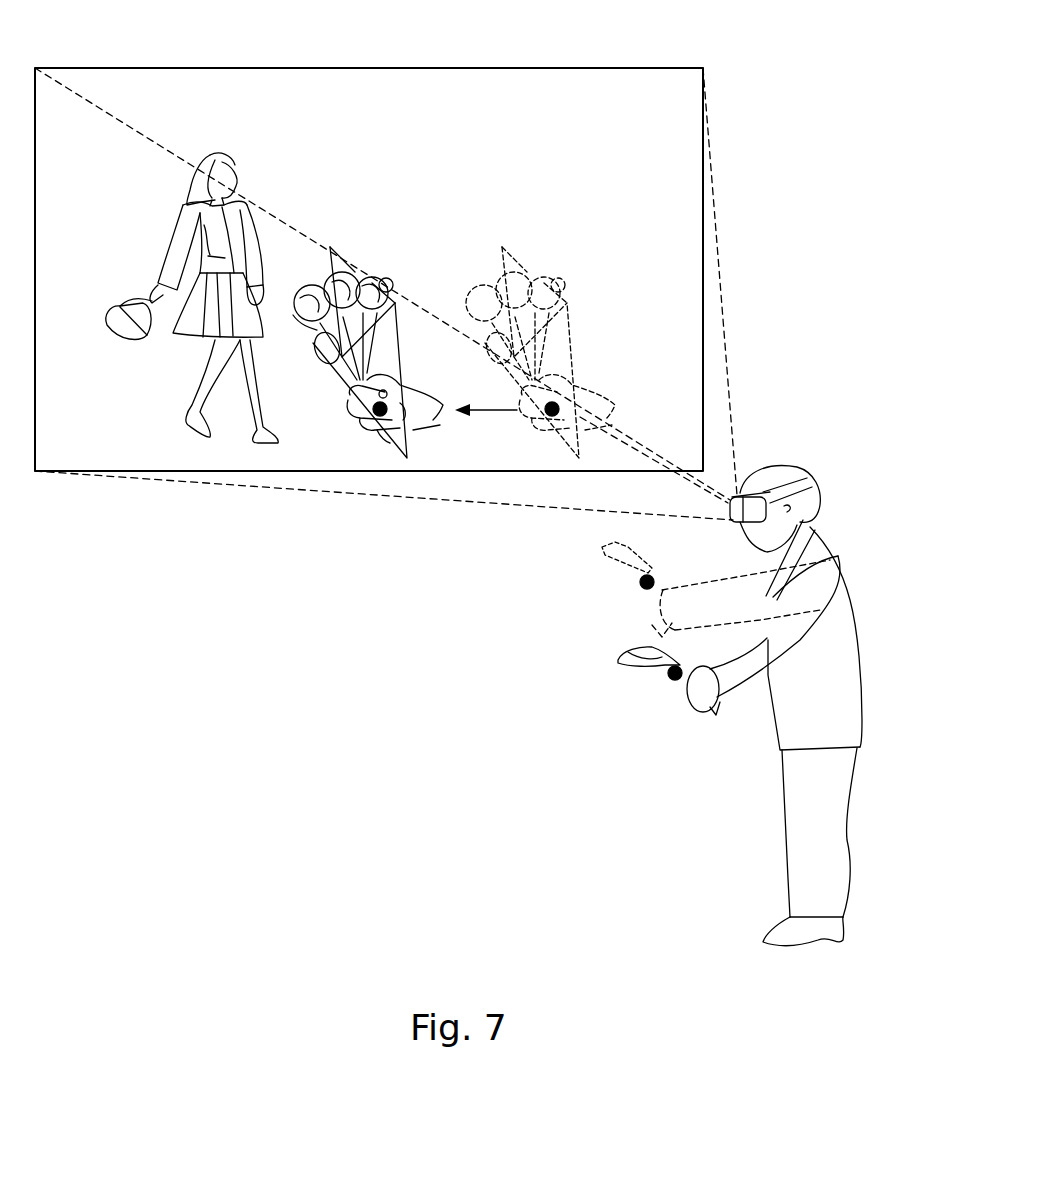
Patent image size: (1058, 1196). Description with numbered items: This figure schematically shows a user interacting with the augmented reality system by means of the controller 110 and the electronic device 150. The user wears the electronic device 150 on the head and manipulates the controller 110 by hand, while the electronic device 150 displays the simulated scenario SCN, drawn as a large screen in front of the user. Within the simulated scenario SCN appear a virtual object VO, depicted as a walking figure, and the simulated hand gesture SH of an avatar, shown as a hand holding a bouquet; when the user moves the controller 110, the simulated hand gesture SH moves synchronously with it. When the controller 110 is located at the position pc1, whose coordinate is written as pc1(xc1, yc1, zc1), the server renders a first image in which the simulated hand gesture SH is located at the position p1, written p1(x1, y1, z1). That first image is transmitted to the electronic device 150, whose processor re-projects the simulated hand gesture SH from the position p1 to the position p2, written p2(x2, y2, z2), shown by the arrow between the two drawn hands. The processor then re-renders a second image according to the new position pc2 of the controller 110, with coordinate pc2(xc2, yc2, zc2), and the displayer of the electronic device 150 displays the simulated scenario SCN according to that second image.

The simulated scenario SCN is at (424, 68).
The virtual object VO is at (222, 152).
The simulated hand gesture SH is at (418, 422).
The position p1 is at (550, 416).
The position p2 is at (378, 416).
The electronic device 150 is at (813, 480).
The controller 110 is at (602, 558).
The position pc1 is at (645, 583).
The position pc2 is at (668, 680).